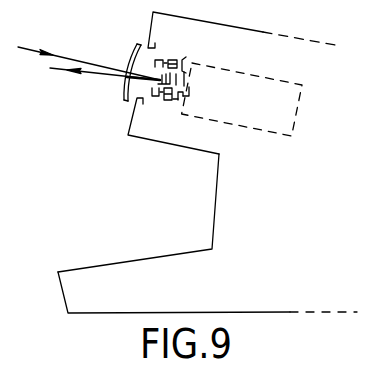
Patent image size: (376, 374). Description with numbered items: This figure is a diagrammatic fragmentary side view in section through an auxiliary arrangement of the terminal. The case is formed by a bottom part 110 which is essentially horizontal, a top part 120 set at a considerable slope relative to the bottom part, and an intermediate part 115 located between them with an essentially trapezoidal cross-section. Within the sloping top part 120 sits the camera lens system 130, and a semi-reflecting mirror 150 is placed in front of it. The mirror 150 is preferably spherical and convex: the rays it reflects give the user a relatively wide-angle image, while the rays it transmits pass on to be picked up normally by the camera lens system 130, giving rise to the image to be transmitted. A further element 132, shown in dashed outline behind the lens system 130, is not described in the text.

The bottom part 110 is at (195, 298).
The intermediate part 115 is at (303, 218).
The top part 120 is at (218, 146).
The camera lens system 130 is at (190, 58).
The circuit board 132 is at (292, 83).
The semi-reflecting mirror 150 is at (129, 54).